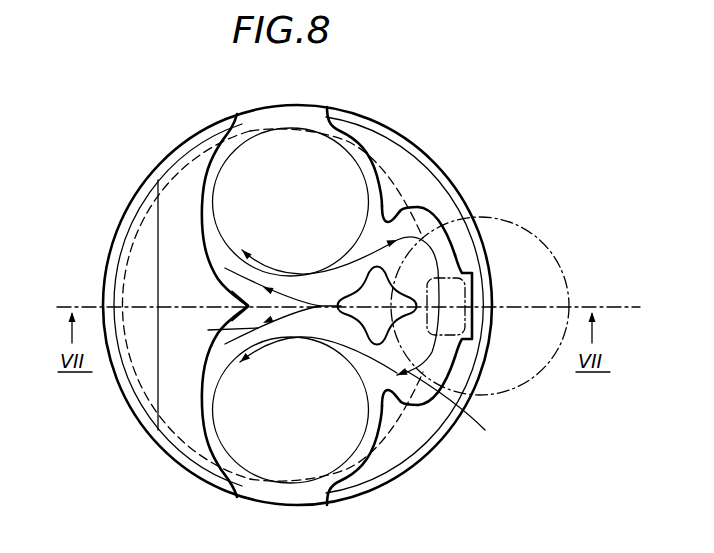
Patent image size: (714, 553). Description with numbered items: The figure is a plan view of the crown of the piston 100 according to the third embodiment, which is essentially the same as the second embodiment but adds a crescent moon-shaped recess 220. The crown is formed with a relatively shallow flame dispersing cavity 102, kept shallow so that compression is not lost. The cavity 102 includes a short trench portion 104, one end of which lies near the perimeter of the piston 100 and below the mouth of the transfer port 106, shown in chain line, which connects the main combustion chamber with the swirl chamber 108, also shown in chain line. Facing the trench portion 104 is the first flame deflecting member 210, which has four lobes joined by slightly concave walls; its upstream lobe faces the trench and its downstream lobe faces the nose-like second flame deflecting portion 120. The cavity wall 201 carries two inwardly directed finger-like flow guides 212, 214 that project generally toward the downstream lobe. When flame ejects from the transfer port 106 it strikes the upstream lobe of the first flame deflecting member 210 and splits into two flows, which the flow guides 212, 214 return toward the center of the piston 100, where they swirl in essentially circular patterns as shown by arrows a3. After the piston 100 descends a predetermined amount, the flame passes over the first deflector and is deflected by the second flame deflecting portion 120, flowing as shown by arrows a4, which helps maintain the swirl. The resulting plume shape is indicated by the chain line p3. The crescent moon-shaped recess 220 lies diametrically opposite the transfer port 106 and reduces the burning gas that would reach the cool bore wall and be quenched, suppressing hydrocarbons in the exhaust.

The piston 100 is at (458, 190).
The cavity 102 is at (218, 160).
The trench portion 104 is at (472, 288).
The transfer port 106 is at (470, 322).
The swirl chamber 108 is at (545, 247).
The second flame deflecting portion 120 is at (246, 306).
The right wall 201 is at (347, 140).
The first flame deflecting member 210 is at (363, 295).
The flow guide 212 is at (386, 218).
The flow guide 214 is at (387, 396).
The crescent moon-shaped recess 220 is at (134, 283).
The arrows a3 is at (459, 408).
The arrows a4 is at (217, 330).
The path p3 is at (184, 452).